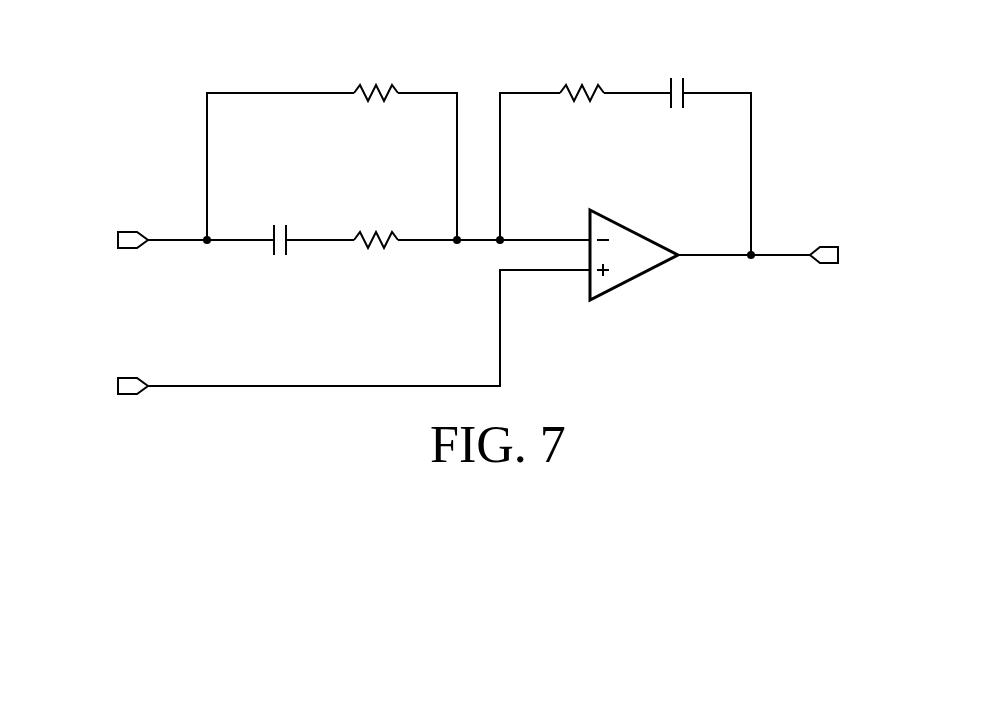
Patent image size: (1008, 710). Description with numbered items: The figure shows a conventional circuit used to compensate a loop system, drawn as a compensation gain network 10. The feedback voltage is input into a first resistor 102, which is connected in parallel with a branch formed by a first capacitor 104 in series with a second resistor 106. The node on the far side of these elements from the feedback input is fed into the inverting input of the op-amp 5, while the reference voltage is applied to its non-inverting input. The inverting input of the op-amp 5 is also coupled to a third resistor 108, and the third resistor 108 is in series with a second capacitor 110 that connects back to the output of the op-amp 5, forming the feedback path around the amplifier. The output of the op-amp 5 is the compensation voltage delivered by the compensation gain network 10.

The compensation gain network 10 is at (838, 108).
The op-amp 5 is at (637, 277).
The first resistor 102 is at (377, 80).
The first capacitor 104 is at (282, 255).
The second resistor 106 is at (377, 255).
The third resistor 108 is at (582, 80).
The second capacitor 110 is at (677, 75).